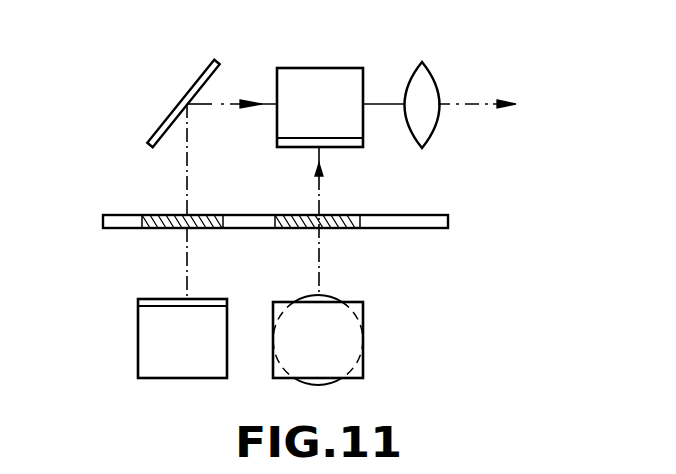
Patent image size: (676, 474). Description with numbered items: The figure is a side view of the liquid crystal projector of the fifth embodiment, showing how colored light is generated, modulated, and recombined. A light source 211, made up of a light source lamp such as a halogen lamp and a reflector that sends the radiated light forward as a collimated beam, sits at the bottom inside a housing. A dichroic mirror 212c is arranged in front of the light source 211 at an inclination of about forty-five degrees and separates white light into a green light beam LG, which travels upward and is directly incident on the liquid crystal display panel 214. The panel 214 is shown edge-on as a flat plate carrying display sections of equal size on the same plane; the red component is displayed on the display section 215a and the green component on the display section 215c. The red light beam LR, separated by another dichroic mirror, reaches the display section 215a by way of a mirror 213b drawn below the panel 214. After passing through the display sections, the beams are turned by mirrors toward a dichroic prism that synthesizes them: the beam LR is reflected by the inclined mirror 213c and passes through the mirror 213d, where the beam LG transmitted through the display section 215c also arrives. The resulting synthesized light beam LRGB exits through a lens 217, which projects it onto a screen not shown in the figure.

The light source 211 is at (363, 311).
The dichroic mirror 212c is at (363, 365).
The mirror 213b is at (138, 352).
The mirror 213c is at (187, 87).
The mirror 213d is at (330, 67).
The liquid crystal display panel 214 is at (447, 214).
The display section 215a is at (220, 214).
The display section 215c is at (352, 214).
The lens 217 is at (460, 53).
The red light beam LR is at (212, 106).
The green light beam LG is at (320, 181).
The synthesized light beam LRGB is at (487, 107).